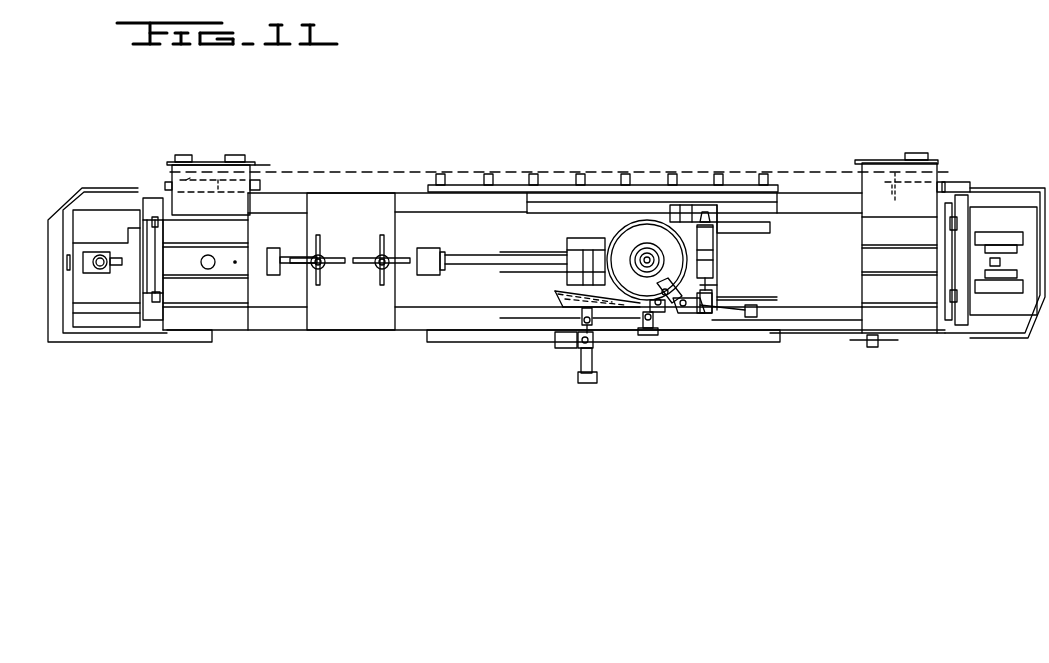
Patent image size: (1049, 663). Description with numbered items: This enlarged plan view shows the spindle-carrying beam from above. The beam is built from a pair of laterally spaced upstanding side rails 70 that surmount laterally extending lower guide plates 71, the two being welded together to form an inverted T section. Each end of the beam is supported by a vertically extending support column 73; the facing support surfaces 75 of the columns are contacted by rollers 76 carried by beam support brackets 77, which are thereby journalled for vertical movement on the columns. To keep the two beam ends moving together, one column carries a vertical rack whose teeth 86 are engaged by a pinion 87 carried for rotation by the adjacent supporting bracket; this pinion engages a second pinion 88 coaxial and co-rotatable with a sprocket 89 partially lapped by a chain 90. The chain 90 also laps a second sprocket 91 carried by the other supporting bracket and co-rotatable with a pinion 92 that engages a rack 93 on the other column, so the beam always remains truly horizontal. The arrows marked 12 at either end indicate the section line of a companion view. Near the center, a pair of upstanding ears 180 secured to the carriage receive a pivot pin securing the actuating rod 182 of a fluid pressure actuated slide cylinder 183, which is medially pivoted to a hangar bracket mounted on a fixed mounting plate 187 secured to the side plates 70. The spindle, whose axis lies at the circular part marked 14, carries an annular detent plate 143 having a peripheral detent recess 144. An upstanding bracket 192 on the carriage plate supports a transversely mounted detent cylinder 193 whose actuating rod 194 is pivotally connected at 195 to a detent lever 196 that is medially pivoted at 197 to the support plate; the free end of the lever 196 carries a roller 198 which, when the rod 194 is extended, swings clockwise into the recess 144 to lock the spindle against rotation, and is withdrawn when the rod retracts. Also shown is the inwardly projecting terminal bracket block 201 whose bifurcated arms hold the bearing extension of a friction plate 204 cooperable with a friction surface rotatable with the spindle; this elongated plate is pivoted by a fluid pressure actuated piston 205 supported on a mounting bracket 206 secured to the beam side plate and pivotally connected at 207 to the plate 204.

The section line 12- 12 is at (983, 140).
The disc 14 is at (641, 248).
The side rails 70 is at (785, 202).
The lower guide plates 71 is at (418, 213).
The support column 73 is at (52, 292).
The support surfaces 75 is at (147, 210).
The rollers 76 is at (147, 302).
The beam support brackets 77 is at (235, 242).
The teeth 86 is at (175, 168).
The pinion 87 is at (190, 178).
The second pinion 88 is at (261, 185).
The sprocket 89 is at (265, 166).
The chain 90 is at (470, 172).
The second sprocket 91 is at (944, 172).
The pinion 92 is at (896, 190).
The rack 93 is at (965, 182).
The annular detent plate 143 is at (655, 300).
The detent recess 144 is at (648, 310).
The upstanding ears 180 is at (578, 255).
The actuating rod 182 is at (466, 260).
The slide cylinder 183 is at (425, 278).
The mounting plate 187 is at (352, 315).
The upstanding bracket 192 is at (712, 218).
The detent cylinder 193 is at (715, 246).
The actuating rod 194 is at (710, 288).
The pivotal connection 195 is at (702, 313).
The detent lever 196 is at (713, 300).
The pivot 197 is at (690, 313).
The roller 198 is at (656, 288).
The terminal bracket block 201 is at (655, 312).
The friction plate 204 is at (560, 293).
The piston 205 is at (581, 360).
The mounting bracket 206 is at (557, 345).
The pivotal connection 207 is at (580, 317).